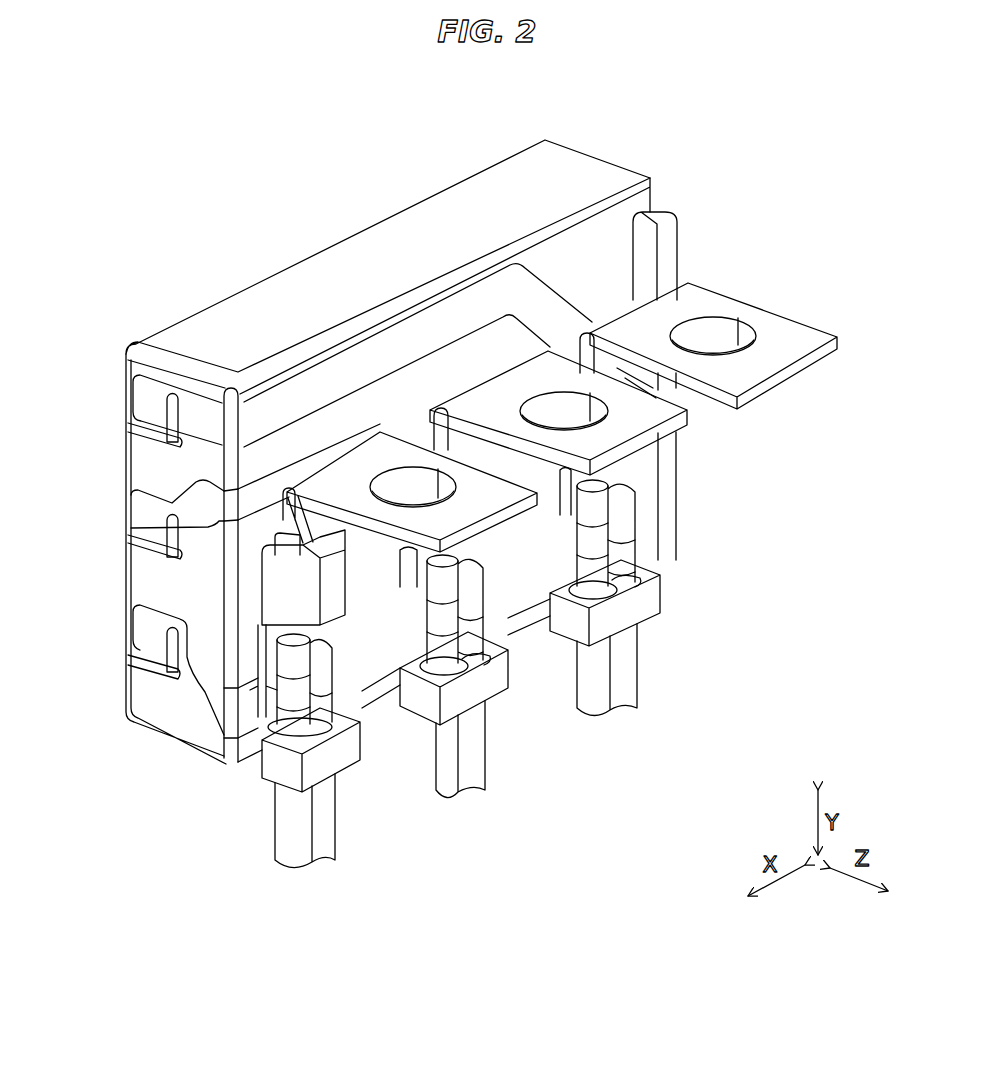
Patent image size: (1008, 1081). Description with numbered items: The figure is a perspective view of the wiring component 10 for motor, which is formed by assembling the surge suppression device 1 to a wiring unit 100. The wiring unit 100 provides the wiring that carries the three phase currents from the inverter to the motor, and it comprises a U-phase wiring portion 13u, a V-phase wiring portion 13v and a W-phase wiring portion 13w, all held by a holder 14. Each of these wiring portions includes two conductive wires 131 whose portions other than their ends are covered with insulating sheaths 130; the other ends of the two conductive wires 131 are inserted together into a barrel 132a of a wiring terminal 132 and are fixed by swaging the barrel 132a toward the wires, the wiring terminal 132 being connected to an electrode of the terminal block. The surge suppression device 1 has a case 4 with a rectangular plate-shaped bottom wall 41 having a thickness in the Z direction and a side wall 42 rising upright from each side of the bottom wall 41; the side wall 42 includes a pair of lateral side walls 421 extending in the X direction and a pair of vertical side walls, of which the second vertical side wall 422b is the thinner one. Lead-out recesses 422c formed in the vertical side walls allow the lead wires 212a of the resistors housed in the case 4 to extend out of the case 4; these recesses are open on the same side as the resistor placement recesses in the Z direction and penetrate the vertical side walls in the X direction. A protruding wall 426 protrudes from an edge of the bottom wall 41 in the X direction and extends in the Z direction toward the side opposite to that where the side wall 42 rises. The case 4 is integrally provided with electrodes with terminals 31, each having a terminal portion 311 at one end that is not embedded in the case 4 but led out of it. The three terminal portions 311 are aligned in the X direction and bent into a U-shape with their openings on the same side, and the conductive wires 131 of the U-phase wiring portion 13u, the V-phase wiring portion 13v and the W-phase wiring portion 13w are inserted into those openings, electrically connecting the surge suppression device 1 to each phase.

The surge suppression device 1 is at (168, 190).
The case 4 is at (428, 226).
The side wall 42 is at (358, 276).
The lateral side wall 421 is at (245, 328).
The bottom wall 41 is at (445, 370).
The second vertical side wall 422b is at (158, 478).
The lead-out recess 422c is at (163, 434).
The lead wire 212a is at (166, 403).
The protruding wall 426 is at (670, 263).
The electrode with terminal 31 is at (263, 490).
The terminal portion 311 is at (320, 650).
The wiring terminal 132 is at (805, 332).
The barrel 132a is at (278, 597).
The wiring component for motor 10 is at (741, 696).
The wiring unit 100 is at (657, 678).
The insulating sheath 130 is at (598, 573).
The conductive wire 131 is at (598, 542).
The holder 14 is at (638, 607).
The U-phase wiring portion 13u is at (609, 724).
The V-phase wiring portion 13v is at (459, 802).
The W-phase wiring portion 13w is at (311, 872).